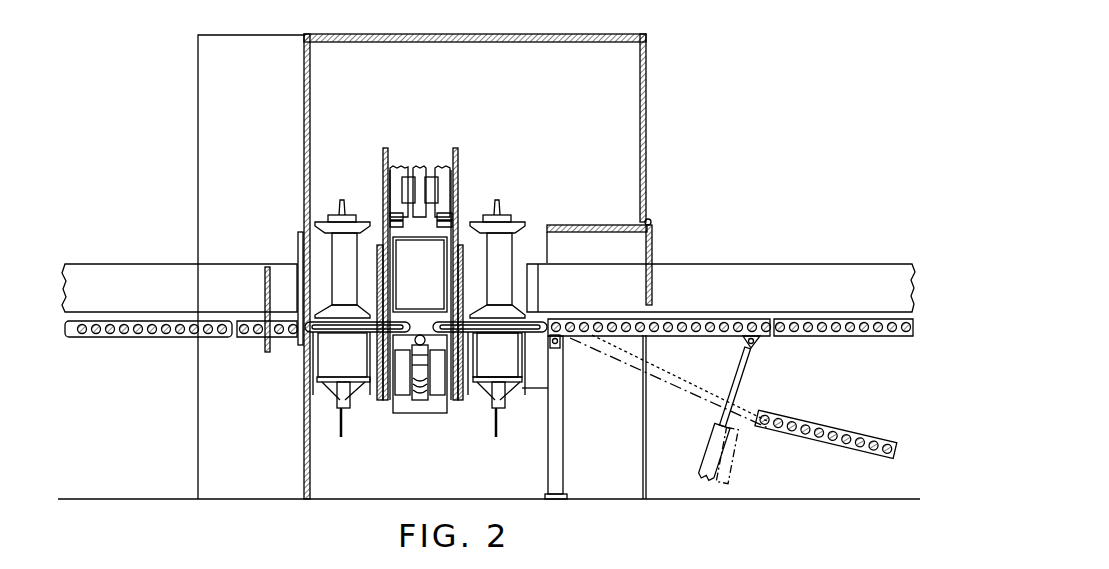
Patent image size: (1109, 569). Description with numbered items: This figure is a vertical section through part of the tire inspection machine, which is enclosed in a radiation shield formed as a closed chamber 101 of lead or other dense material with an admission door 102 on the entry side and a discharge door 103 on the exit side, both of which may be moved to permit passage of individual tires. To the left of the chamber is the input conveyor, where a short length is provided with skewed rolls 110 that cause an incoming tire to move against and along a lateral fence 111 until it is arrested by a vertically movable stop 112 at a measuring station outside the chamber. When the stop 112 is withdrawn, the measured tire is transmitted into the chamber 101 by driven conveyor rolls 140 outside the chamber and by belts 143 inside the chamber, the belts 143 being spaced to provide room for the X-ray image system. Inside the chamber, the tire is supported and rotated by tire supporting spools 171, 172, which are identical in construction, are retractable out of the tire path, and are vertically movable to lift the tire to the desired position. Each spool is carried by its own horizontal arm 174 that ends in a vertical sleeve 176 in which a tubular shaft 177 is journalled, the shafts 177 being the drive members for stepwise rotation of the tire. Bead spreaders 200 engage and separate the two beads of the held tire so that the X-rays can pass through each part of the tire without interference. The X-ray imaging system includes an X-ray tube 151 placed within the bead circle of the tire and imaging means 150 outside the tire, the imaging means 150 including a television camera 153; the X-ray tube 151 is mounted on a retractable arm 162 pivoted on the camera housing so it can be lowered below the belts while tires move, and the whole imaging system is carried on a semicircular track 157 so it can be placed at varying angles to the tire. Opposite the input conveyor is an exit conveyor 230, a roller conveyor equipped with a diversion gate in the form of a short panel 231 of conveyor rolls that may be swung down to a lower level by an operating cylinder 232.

The closed chamber 101 is at (643, 77).
The admission door 102 is at (298, 239).
The discharge door 103 is at (652, 243).
The skewed rolls 110 is at (112, 330).
The lateral fence 111 is at (107, 278).
The vertically movable stop 112 is at (265, 283).
The driven conveyor rolls 140 is at (242, 336).
The belts 143 is at (333, 333).
The imaging means 150 is at (410, 416).
The X-ray tube 151 is at (437, 345).
The television camera 153 is at (432, 278).
The semicircular track 157 is at (458, 158).
The retractible arm 162 is at (410, 385).
The tire supporting spool 171 is at (320, 216).
The tire supporting spool 172 is at (515, 220).
The horizontal arm 174 is at (520, 345).
The vertical sleeve 176 is at (510, 372).
The tubular shaft 177 is at (332, 258).
The bead spreaders 200 is at (399, 205).
The exit conveyor 230 is at (836, 333).
The short panel 231 is at (695, 337).
The operating cylinder 232 is at (708, 447).